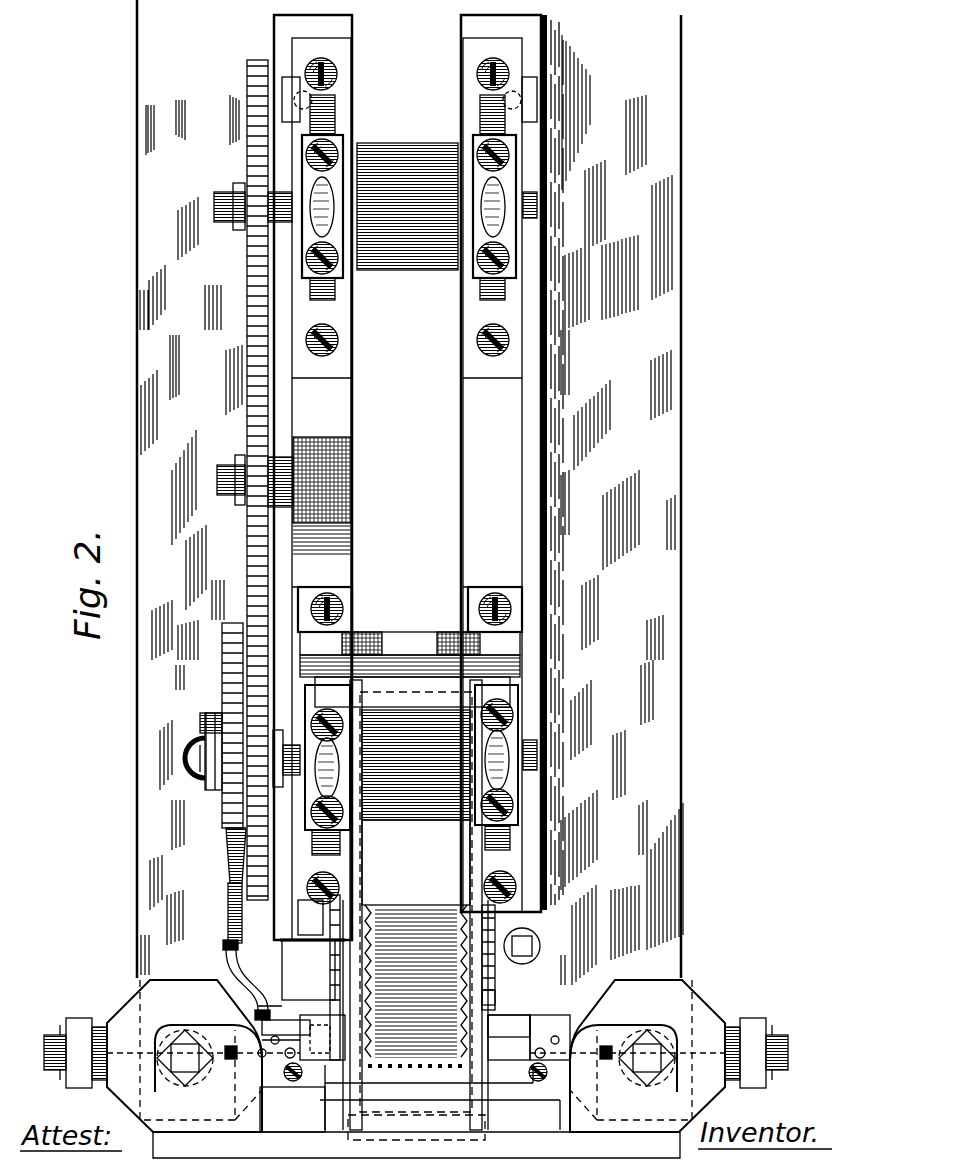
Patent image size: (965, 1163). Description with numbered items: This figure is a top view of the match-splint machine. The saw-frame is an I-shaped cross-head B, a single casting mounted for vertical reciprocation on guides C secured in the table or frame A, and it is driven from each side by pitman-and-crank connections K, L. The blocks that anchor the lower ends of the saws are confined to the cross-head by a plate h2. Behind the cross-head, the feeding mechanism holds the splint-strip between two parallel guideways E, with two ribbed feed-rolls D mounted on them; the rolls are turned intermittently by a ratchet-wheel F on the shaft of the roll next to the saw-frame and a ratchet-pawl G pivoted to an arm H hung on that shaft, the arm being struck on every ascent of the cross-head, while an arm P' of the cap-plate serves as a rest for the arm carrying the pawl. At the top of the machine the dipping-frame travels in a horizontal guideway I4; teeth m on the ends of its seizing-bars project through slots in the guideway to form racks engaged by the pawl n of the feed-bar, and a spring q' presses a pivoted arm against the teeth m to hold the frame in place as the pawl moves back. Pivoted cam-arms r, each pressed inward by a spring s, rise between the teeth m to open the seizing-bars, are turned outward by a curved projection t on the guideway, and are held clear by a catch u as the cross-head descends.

The frame A is at (410, 579).
The cross-head B is at (416, 1056).
The feed-rolls D is at (414, 830).
The guideways E is at (377, 477).
The ratchet-wheel F is at (246, 783).
The ratchet-pawl G is at (226, 868).
The arm H is at (233, 928).
The guideway I4 is at (437, 908).
The pitman-and-crank connection K is at (756, 1053).
The pitman-and-crank connection L is at (75, 1053).
The arm of cap-plate P' is at (311, 977).
The spring q' is at (307, 917).
The spring s is at (396, 1022).
The inclined or curved projection t is at (322, 1037).
The catch u is at (405, 1058).
The cam-arms r is at (281, 1020).
The guides C is at (529, 1032).
The tooth m is at (511, 955).
The pawl n is at (494, 998).
The plate h2 is at (292, 1109).